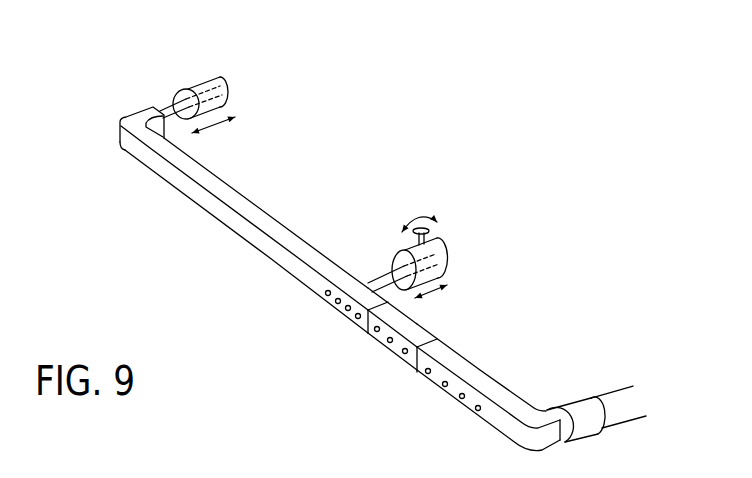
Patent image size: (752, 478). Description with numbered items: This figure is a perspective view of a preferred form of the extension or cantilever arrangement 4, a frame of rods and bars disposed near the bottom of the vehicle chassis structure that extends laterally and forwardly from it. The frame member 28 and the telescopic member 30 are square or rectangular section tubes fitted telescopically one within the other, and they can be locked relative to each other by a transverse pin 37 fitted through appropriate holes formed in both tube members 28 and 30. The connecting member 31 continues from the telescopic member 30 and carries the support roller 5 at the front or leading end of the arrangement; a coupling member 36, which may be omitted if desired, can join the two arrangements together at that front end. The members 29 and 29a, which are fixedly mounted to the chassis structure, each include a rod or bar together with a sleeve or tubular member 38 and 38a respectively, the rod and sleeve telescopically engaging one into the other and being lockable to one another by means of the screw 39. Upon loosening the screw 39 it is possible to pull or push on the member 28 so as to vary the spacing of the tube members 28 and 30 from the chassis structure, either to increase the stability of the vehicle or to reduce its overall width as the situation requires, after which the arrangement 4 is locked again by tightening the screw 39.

The extension or cantilever arrangement 4 is at (320, 328).
The support roller 5 is at (585, 409).
The frame member 28 is at (211, 210).
The frame member 29 is at (380, 280).
The frame member 29a is at (169, 108).
The telescopic member 30 is at (381, 338).
The connecting member 31 is at (495, 420).
The coupling member 36 is at (607, 418).
The transverse pin 37 is at (424, 373).
The sleeve or tubular member 38 is at (448, 262).
The sleeve or tubular member 38a is at (224, 92).
The screw 39 is at (427, 237).